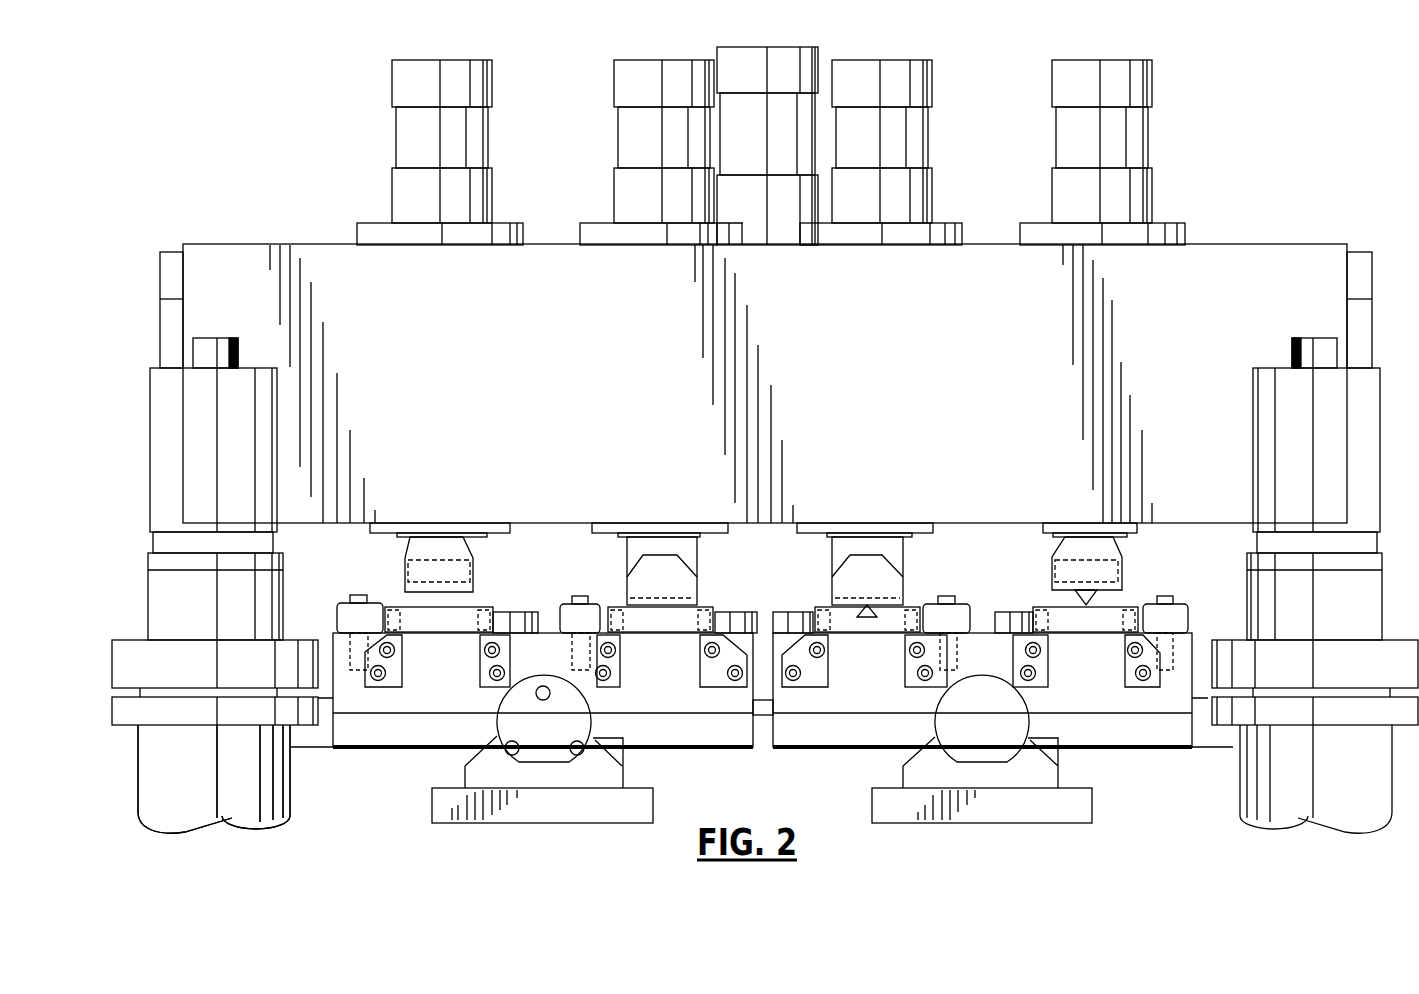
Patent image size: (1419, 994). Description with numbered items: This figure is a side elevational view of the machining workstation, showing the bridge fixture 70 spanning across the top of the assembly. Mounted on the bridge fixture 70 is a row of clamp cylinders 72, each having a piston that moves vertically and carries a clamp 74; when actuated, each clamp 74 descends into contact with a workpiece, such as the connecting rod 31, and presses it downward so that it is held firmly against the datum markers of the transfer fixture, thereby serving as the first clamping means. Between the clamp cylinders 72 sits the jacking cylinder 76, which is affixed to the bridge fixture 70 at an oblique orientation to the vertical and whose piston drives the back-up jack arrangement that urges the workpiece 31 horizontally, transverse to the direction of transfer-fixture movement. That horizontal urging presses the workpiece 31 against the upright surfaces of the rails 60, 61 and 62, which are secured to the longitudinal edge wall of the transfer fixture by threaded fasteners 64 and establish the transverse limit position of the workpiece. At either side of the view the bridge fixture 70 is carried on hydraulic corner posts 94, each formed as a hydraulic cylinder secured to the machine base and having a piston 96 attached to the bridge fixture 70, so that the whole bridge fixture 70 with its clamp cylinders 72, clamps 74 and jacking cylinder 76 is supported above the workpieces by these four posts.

The connecting rod 31 is at (1052, 605).
The rail 60 is at (402, 665).
The rail 61 is at (512, 680).
The rail 62 is at (702, 673).
The threaded fasteners 64 is at (690, 650).
The bridge fixture 70 is at (1240, 256).
The clamp cylinder 72 is at (476, 142).
The clamp 74 is at (458, 570).
The jacking cylinder 76 is at (806, 66).
The hydraulic corner posts 94 is at (272, 787).
The piston 96 is at (1356, 593).